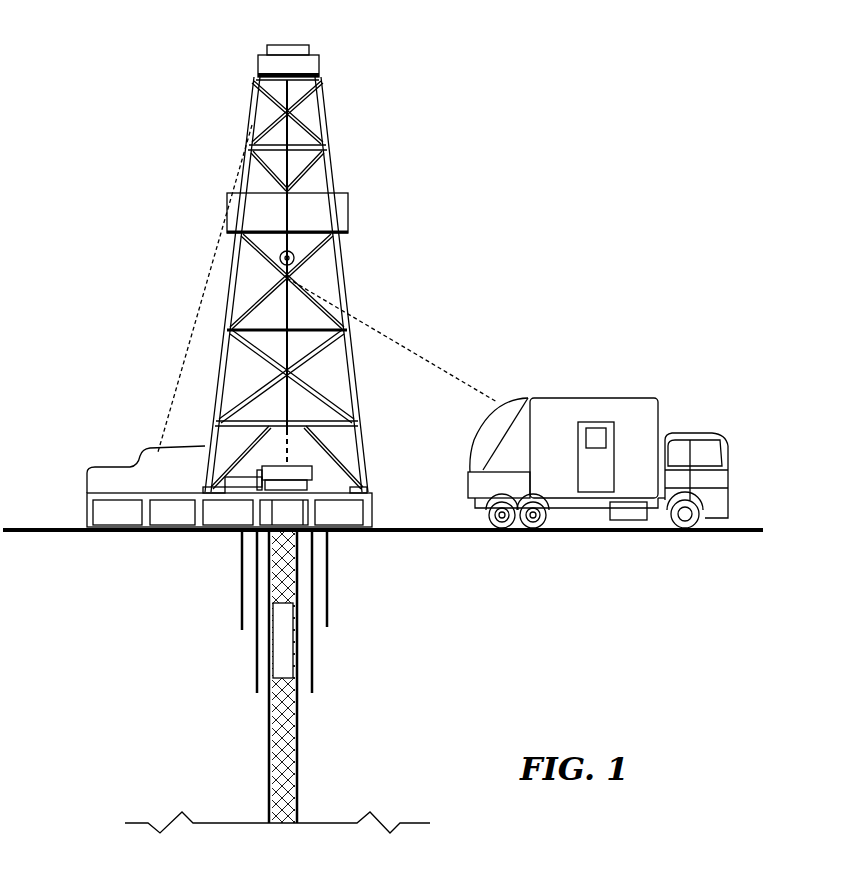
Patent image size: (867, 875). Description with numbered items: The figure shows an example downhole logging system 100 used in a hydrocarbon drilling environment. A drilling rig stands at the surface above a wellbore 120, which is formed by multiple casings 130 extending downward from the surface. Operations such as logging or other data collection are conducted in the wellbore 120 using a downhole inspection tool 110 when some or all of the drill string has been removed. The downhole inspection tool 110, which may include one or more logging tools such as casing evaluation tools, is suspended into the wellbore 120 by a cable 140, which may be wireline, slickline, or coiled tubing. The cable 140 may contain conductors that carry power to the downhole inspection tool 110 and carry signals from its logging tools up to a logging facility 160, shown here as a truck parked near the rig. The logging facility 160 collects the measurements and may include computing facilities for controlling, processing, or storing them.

The downhole logging system 100 is at (499, 220).
The downhole inspection tool 110 is at (289, 657).
The wellbore 120 is at (291, 715).
The casings 130 is at (265, 728).
The cable 140 is at (280, 582).
The logging facility 160 is at (592, 393).